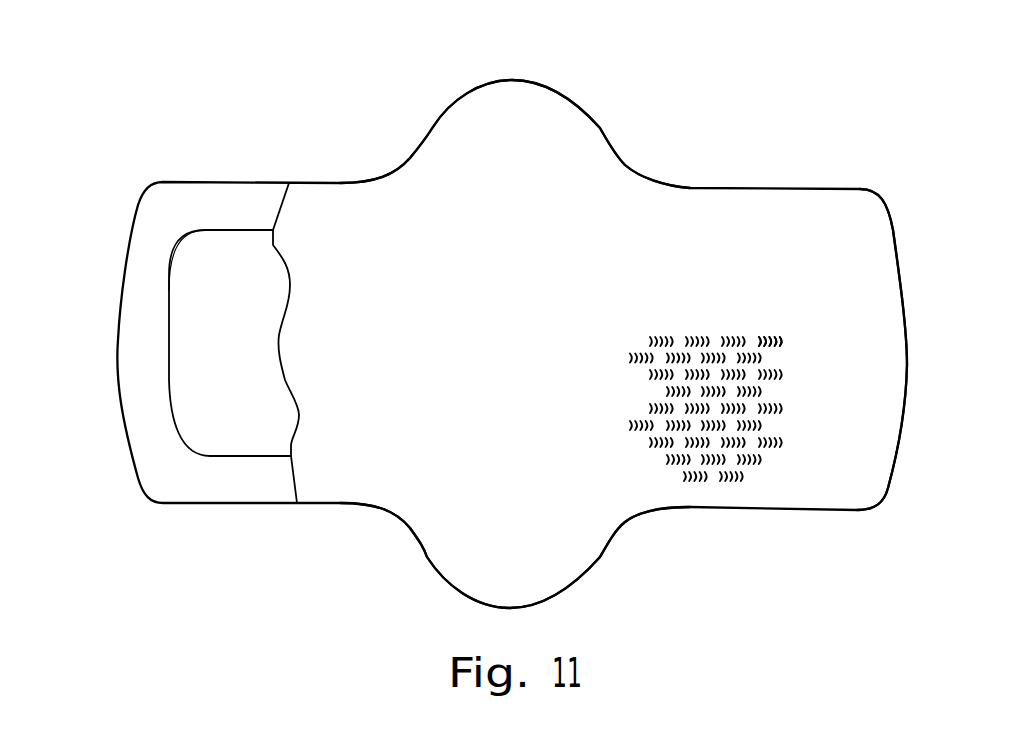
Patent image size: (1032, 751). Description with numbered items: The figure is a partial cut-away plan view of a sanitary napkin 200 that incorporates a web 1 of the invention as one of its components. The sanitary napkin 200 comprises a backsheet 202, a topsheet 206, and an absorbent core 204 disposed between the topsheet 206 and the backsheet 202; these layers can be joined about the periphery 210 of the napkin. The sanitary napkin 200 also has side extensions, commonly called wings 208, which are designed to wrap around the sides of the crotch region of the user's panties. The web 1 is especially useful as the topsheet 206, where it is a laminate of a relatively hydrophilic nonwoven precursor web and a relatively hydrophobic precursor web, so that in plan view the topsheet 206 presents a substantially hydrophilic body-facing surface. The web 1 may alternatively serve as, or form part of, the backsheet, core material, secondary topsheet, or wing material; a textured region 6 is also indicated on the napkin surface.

The sanitary napkin 200 is at (204, 158).
The backsheet 202 is at (153, 228).
The absorbent core 204 is at (233, 243).
The topsheet 206 is at (517, 432).
The wings 208 is at (543, 123).
The periphery 210 is at (750, 510).
The embossed pattern 6 is at (733, 337).
The web 1 is at (773, 362).